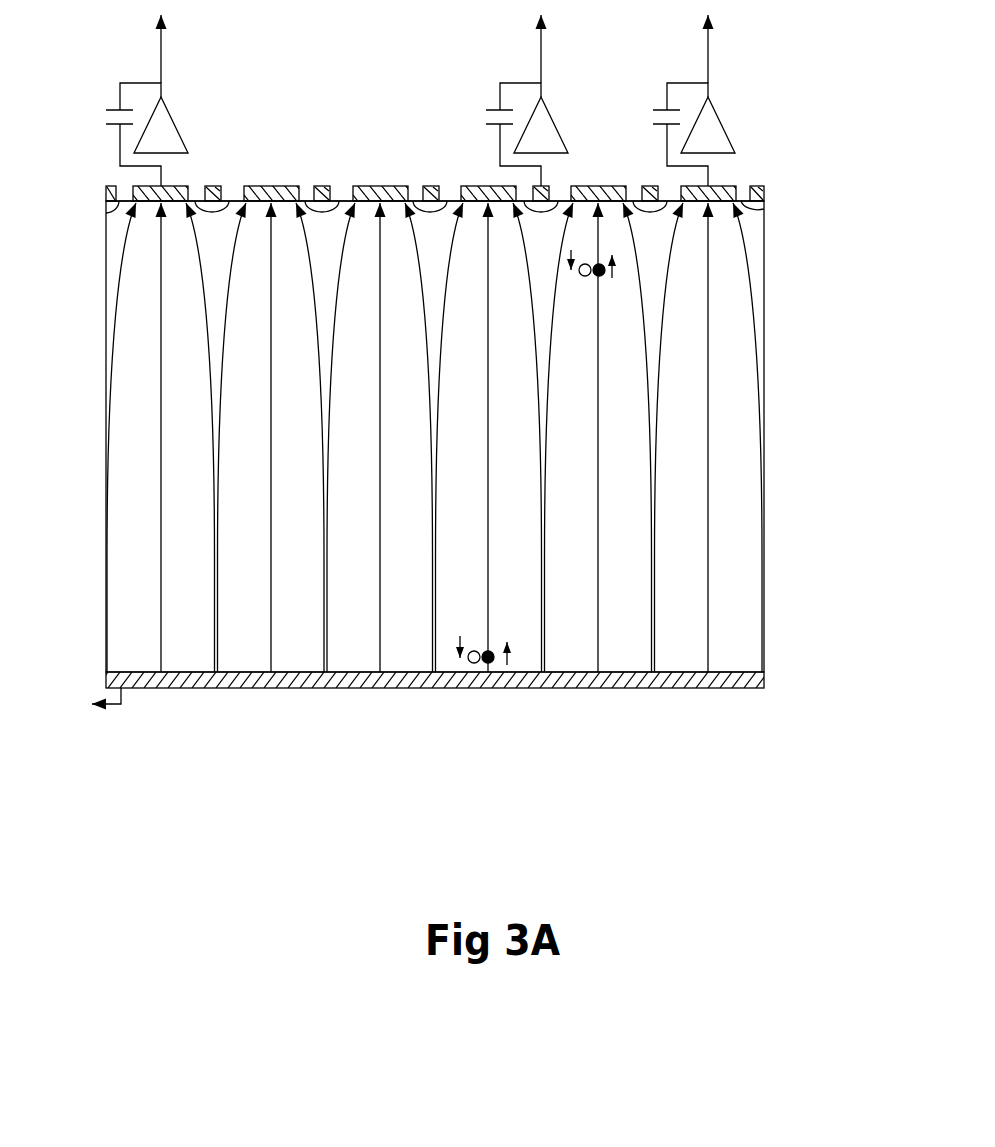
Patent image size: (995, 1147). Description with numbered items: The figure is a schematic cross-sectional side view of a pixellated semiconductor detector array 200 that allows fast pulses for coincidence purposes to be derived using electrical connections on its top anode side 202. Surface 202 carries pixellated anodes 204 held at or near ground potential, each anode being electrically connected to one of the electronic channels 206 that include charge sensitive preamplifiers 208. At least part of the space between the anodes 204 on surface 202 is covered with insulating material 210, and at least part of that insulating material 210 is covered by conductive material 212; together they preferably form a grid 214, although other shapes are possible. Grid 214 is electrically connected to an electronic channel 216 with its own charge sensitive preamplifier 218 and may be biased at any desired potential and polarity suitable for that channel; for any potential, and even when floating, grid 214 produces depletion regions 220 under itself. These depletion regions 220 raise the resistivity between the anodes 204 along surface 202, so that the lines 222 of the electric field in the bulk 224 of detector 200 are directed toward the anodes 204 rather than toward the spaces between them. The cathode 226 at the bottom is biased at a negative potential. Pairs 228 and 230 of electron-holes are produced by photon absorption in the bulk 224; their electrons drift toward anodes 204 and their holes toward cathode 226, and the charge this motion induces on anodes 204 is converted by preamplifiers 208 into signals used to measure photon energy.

The pixellated semiconductor detector array 200 is at (735, 540).
The top anode side 202 is at (128, 200).
The pixellated anodes 204 is at (723, 185).
The electronic channels 206 is at (708, 47).
The charge sensitive preamplifiers 208 is at (713, 123).
The insulating material 210 is at (765, 199).
The conductive material 212 is at (763, 191).
The grid 214 is at (541, 187).
The electronic channel 216 is at (541, 61).
The charge sensitive preamplifier 218 is at (543, 130).
The depletion regions 220 is at (198, 203).
The lines of the electric field 222 is at (748, 257).
The bulk 224 is at (730, 380).
The cathode 226 is at (143, 688).
The electron-hole pair 228 is at (487, 648).
The electron-hole pair 230 is at (597, 277).